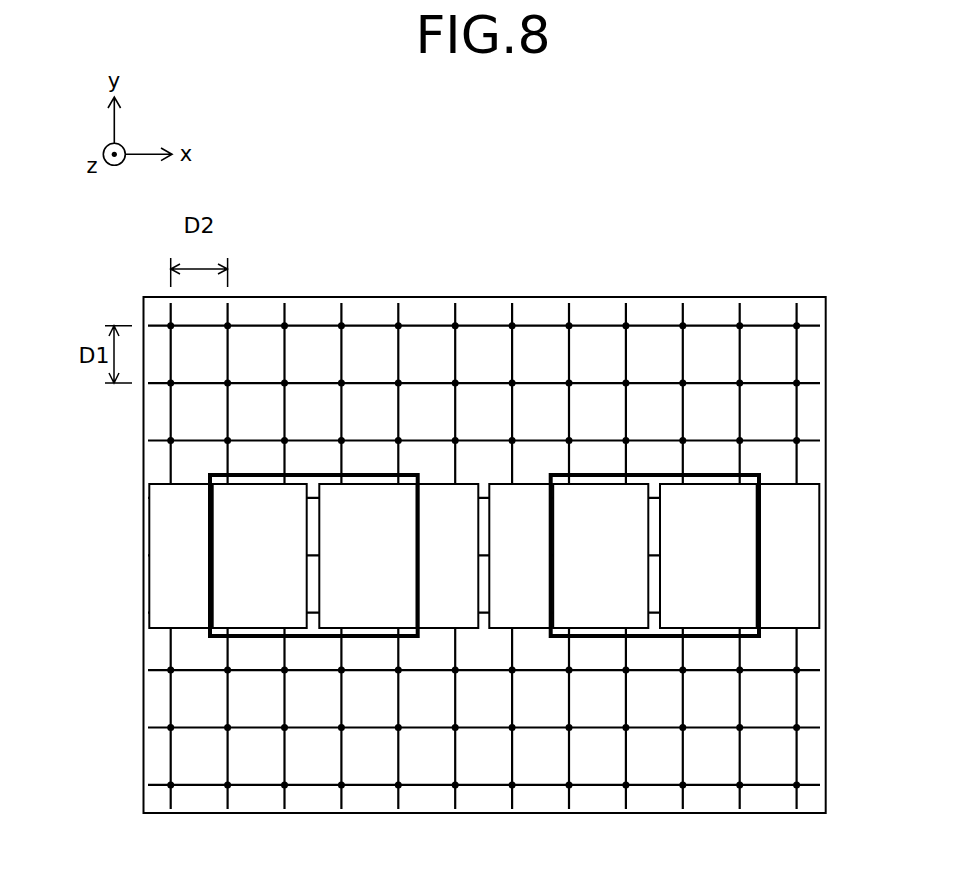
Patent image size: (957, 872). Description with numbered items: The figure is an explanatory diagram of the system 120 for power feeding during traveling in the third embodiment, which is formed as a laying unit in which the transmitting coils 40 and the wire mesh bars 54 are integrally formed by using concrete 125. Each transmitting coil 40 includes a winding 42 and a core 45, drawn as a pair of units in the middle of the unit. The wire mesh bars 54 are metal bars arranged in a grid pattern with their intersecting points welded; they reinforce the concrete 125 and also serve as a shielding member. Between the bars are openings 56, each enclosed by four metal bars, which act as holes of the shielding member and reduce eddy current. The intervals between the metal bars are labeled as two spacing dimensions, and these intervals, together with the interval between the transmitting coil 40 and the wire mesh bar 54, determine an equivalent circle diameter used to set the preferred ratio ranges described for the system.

The system for power feeding during traveling 120 is at (790, 250).
The concrete 125 is at (538, 308).
The wire mesh bars 54 is at (310, 325).
The openings 56 is at (263, 341).
The transmitting coil 40 is at (642, 234).
The winding 42 is at (648, 473).
The core 45 is at (707, 507).